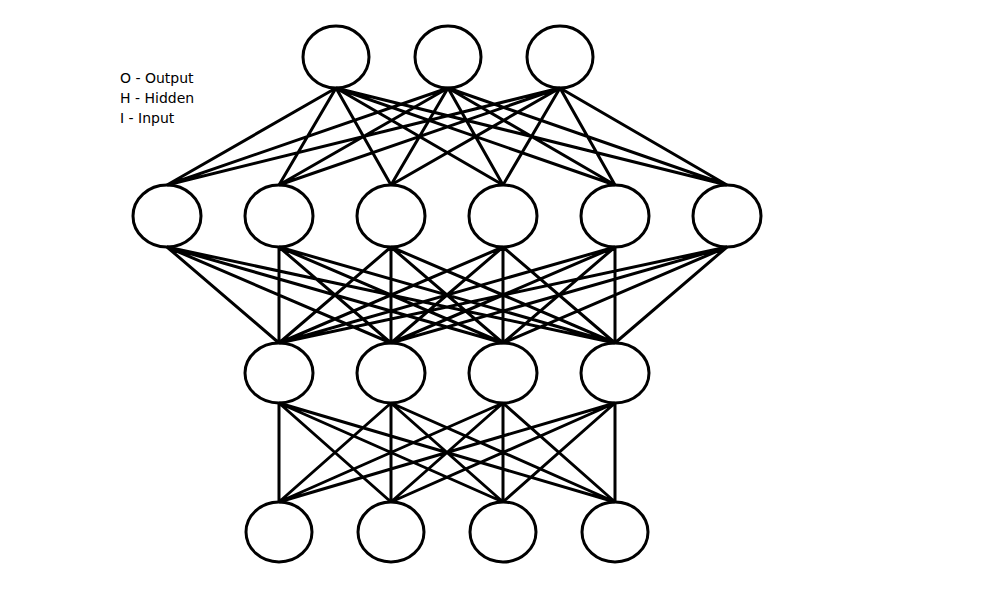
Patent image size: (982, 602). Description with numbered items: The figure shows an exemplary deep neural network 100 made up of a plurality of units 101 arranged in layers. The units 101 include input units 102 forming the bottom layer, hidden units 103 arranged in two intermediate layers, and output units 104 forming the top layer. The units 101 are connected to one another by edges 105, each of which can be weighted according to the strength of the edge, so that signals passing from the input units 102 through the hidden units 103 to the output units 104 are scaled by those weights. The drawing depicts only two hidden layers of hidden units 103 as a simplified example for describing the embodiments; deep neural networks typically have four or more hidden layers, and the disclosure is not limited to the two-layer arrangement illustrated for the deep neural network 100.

The deep neural network 100 is at (705, 64).
The units 101 is at (106, 218).
The input units 102 is at (244, 530).
The hidden units 103 is at (745, 243).
The output units 104 is at (593, 52).
The edges 105 is at (615, 462).